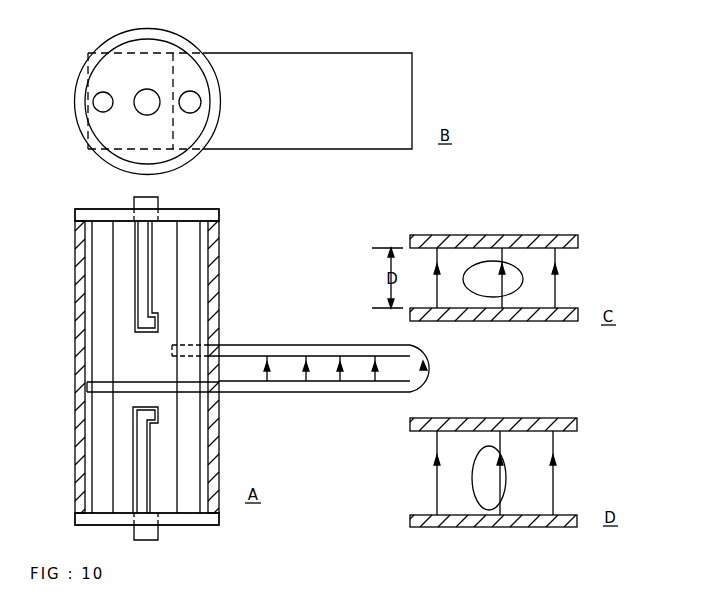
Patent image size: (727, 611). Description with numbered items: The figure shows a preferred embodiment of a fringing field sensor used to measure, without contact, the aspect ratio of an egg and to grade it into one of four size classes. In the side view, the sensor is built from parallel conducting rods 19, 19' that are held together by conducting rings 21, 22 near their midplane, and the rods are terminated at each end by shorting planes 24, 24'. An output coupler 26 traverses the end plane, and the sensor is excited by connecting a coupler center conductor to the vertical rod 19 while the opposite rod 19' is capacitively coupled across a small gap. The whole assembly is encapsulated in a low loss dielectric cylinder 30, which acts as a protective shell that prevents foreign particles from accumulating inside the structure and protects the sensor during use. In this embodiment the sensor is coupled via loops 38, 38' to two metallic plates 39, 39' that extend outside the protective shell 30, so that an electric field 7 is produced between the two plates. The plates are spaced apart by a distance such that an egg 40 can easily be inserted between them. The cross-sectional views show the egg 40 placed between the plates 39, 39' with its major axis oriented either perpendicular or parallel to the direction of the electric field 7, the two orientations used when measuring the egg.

In FIG. 10B, the metallic plate 39 is at (244, 102).
In FIG. 10A, the metallic plate 39 is at (318, 358).
In FIG. 10C, the metallic plate 39 is at (494, 230).
In FIG. 10D, the metallic plate 39 is at (493, 412).
In FIG. 10A, the metallic plate 39' is at (314, 398).
In FIG. 10C, the metallic plate 39' is at (494, 325).
In FIG. 10D, the metallic plate 39' is at (493, 533).
In FIG. 10A, the electric field 7 is at (321, 368).
In FIG. 10C, the electric field 7 is at (505, 278).
In FIG. 10D, the electric field 7 is at (503, 473).
In FIG. 10C, the egg 40 is at (493, 279).
In FIG. 10D, the egg 40 is at (489, 478).
In FIG. 10A, the dielectric cylinder 30 is at (72, 475).
In FIG. 10A, the shorting plane 24 is at (127, 217).
In FIG. 10A, the shorting plane 24' is at (128, 522).
In FIG. 10A, the output coupler 26 is at (161, 202).
In FIG. 10A, the conducting rod 19 is at (189, 367).
In FIG. 10A, the conducting rod 19' is at (105, 367).
In FIG. 10A, the coupling loop 38 is at (155, 276).
In FIG. 10A, the coupling loop 38' is at (156, 460).
In FIG. 10A, the conducting ring 21 is at (169, 350).
In FIG. 10A, the conducting ring 22 is at (158, 381).